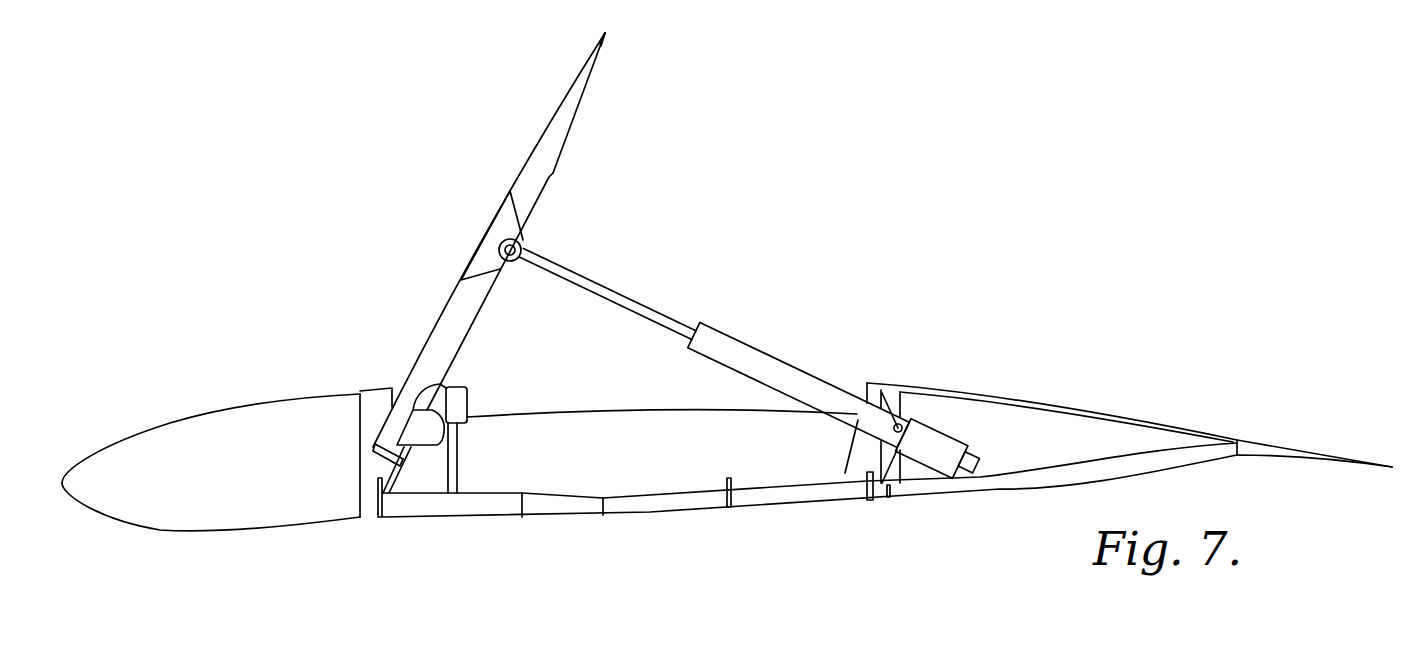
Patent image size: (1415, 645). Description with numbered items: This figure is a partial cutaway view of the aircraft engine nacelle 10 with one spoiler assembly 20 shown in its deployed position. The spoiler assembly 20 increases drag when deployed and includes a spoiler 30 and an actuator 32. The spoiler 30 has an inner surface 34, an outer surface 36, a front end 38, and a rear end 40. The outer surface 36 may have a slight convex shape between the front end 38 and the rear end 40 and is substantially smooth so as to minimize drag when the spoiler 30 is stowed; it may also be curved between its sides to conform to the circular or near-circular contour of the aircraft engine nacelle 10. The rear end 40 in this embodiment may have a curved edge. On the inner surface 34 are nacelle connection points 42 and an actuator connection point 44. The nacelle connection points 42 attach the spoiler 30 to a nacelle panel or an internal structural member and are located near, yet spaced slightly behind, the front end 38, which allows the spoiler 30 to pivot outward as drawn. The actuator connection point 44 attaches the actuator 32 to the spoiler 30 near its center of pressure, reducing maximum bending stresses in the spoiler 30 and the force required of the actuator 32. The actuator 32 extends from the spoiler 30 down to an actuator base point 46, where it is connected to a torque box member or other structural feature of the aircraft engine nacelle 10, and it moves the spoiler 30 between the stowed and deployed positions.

The aircraft engine nacelle 10 is at (186, 387).
The spoiler assembly 20 is at (538, 247).
The spoiler 30 is at (650, 87).
The actuator 32 is at (812, 368).
The inner surface 34 is at (548, 188).
The outer surface 36 is at (542, 130).
The front end 38 is at (372, 417).
The rear end 40 is at (630, 29).
The nacelle connection points 42 is at (427, 432).
The actuator connection point 44 is at (512, 259).
The actuator base point 46 is at (902, 426).